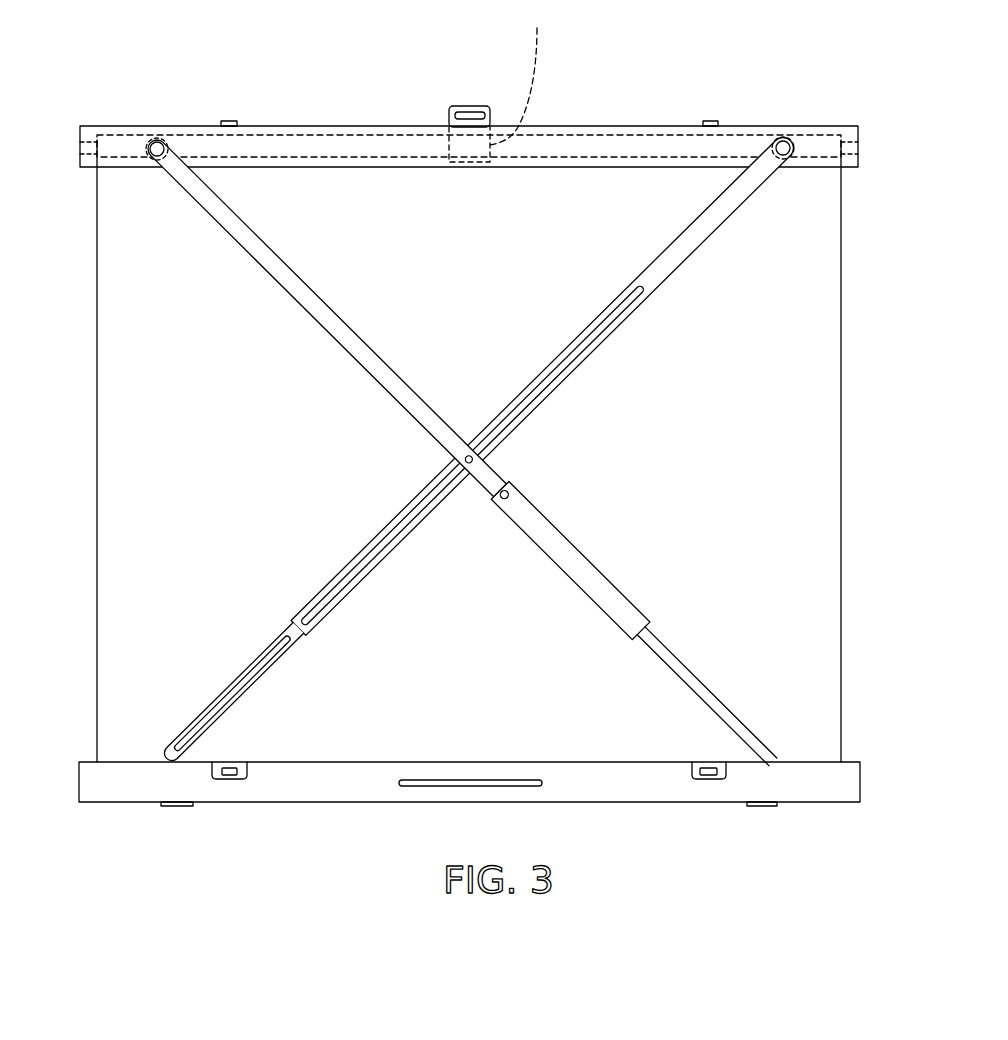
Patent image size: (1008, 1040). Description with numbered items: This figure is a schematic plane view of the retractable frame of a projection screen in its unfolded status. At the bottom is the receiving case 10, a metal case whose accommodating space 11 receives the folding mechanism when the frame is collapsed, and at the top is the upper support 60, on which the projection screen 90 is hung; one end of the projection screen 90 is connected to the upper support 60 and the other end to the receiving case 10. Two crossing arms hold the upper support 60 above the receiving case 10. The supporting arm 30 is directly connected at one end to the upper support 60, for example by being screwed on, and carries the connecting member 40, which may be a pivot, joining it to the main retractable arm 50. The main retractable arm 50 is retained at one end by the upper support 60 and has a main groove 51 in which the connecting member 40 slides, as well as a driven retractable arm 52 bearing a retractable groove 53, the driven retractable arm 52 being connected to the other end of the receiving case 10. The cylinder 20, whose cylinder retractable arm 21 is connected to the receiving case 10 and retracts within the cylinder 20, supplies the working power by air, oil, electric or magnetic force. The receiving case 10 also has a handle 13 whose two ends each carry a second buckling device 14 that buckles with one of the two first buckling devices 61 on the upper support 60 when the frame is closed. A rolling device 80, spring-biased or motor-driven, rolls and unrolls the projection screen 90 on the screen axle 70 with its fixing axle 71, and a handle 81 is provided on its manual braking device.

The receiving case 10 is at (811, 788).
The accommodating space 11 is at (653, 782).
The handle 13 is at (457, 786).
The second buckling device 14 is at (212, 770).
The cylinder 20 is at (597, 583).
The cylinder retractable arm 21 is at (700, 687).
The supporting arm 30 is at (293, 292).
The connecting member 40 is at (466, 457).
The main retractable arm 50 is at (698, 233).
The main groove 51 is at (597, 335).
The driven retractable arm 52 is at (183, 733).
The retractable groove 53 is at (243, 687).
The upper support 60 is at (297, 128).
The first buckling device 61 is at (230, 121).
The screen axle 70 is at (107, 128).
The fixing axle 71 is at (93, 128).
The rolling device 80 is at (524, 73).
The handle 81 is at (457, 106).
The projection screen 90 is at (817, 448).